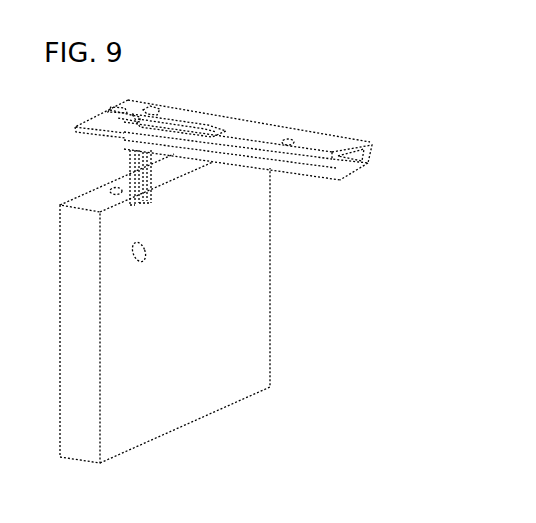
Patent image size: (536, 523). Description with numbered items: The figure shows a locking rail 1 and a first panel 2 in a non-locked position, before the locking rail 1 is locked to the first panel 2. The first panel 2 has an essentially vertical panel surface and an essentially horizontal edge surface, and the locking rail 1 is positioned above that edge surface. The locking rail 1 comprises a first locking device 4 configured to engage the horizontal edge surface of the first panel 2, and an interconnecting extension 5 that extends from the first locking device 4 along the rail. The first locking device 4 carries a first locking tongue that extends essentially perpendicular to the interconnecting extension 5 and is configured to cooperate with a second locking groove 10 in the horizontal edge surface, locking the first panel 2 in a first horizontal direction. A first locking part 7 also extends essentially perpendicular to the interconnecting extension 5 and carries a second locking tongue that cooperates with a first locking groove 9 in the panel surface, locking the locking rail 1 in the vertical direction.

The locking rail 1 is at (277, 121).
The first panel 2 is at (237, 360).
The first locking device 4 is at (148, 111).
The interconnecting extension 5 is at (327, 148).
The first locking part 7 is at (153, 177).
The first locking groove 9 is at (138, 262).
The second locking groove 10 is at (117, 193).